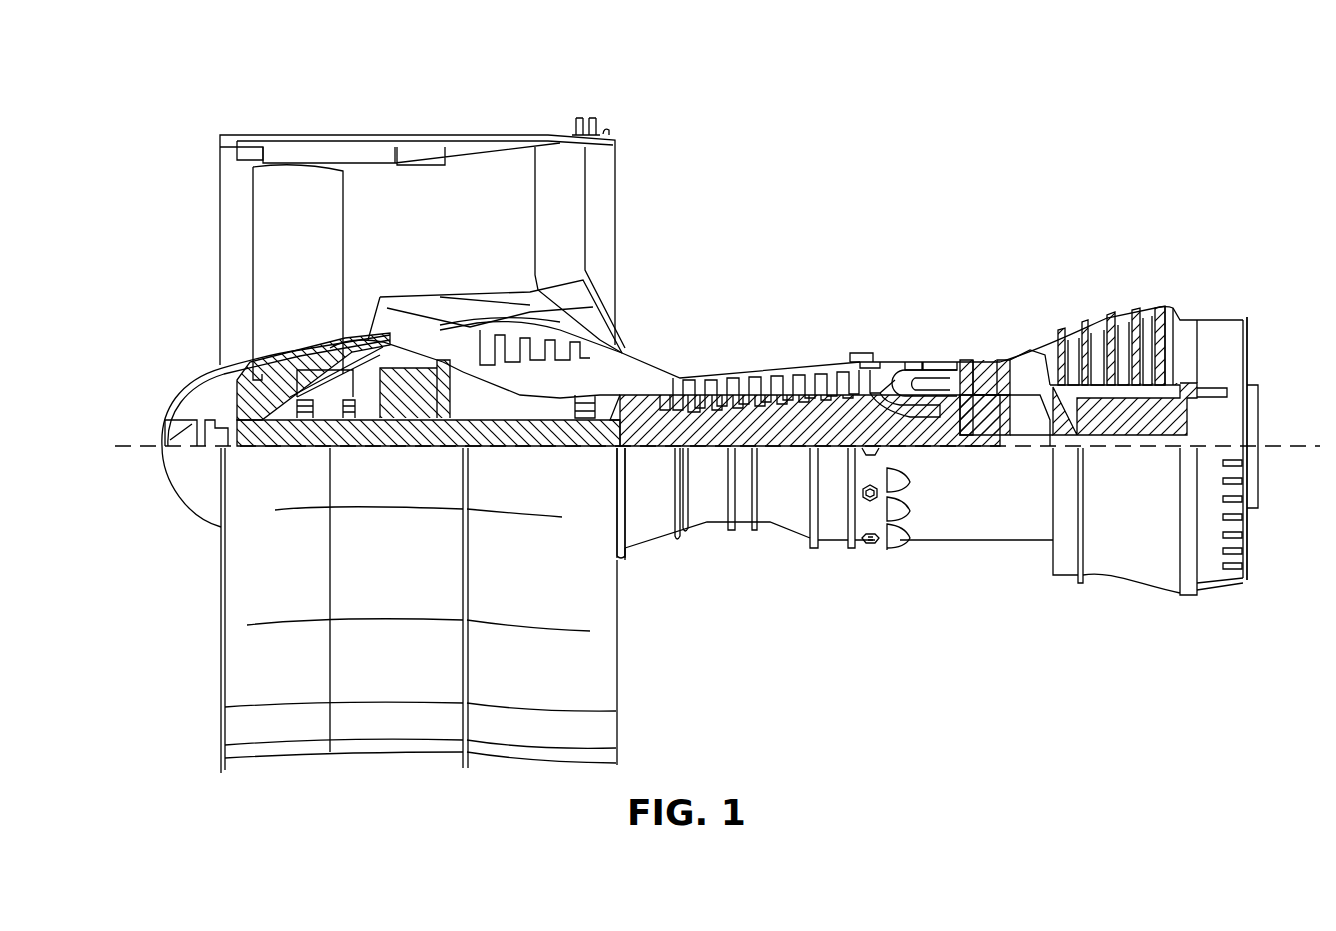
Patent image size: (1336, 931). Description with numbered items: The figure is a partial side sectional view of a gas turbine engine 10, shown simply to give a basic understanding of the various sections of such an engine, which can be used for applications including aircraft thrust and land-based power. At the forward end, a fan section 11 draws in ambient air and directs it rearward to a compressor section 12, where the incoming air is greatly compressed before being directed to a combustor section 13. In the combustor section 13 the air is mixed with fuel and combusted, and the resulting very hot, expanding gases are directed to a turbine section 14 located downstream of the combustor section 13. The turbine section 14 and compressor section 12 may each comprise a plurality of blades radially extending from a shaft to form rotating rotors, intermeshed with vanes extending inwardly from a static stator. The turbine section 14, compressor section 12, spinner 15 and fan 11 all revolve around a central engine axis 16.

The gas turbine engine 10 is at (1064, 146).
The fan section 11 is at (399, 114).
The compressor section 12 is at (660, 344).
The combustor section 13 is at (992, 328).
The turbine section 14 is at (1126, 296).
The spinner 15 is at (188, 352).
The central engine axis 16 is at (1280, 445).